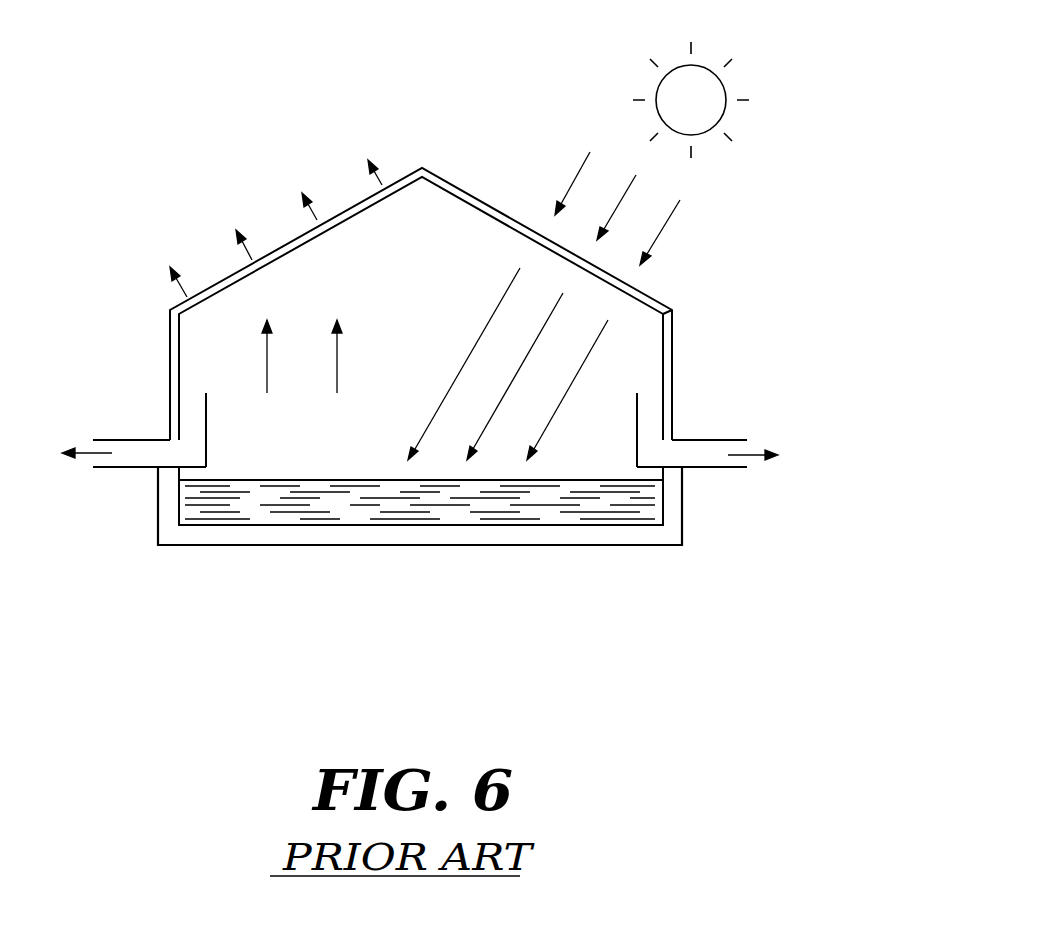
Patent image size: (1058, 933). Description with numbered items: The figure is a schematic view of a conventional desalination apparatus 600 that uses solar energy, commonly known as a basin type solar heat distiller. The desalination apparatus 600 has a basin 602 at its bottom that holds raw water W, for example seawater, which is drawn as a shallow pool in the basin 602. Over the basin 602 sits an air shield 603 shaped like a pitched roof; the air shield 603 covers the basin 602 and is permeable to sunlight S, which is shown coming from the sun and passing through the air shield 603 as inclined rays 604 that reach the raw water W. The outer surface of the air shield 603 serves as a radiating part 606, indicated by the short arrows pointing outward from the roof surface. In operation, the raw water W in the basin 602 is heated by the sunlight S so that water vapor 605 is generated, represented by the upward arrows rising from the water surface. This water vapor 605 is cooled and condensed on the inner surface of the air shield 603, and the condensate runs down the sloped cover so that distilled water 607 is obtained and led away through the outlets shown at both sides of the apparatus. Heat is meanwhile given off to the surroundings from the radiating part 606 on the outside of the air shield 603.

The desalination apparatus 600 is at (828, 124).
The basin 602 is at (657, 542).
The air shield 603 is at (660, 305).
The solar radiation transmitted through cover 604 is at (498, 300).
The water vapor 605 is at (338, 363).
The radiating part 606 is at (383, 168).
The distilled water 607 is at (85, 450).
The sunlight S is at (590, 152).
The raw water W is at (430, 515).